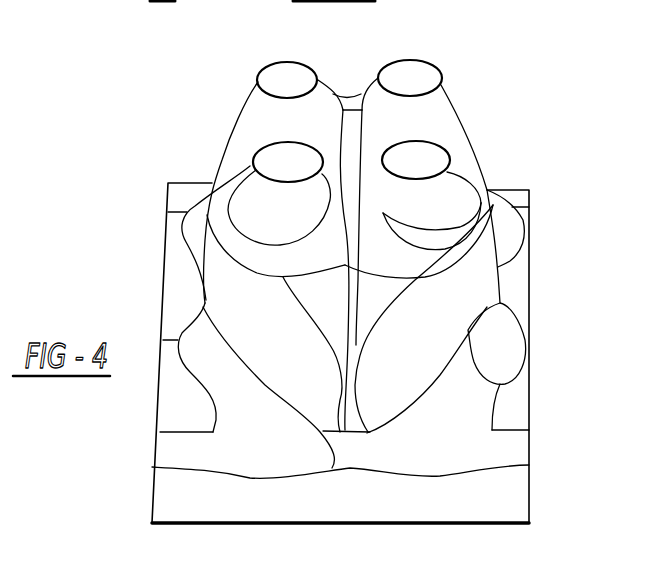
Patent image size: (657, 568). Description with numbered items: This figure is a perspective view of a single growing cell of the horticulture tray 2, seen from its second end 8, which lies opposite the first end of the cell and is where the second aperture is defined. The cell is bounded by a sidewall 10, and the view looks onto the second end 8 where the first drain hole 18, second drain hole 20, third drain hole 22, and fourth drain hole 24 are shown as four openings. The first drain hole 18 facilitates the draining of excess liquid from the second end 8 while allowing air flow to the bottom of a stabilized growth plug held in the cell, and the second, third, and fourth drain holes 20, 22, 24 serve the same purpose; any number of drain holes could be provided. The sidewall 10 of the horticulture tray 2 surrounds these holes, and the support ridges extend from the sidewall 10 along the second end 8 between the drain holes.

The horticulture tray 2 is at (556, 353).
The second end 8 is at (255, 7).
The sidewall 10 is at (267, 323).
The first drain hole 18 is at (277, 75).
The second drain hole 20 is at (278, 160).
The third drain hole 22 is at (410, 162).
The fourth drain hole 24 is at (408, 78).